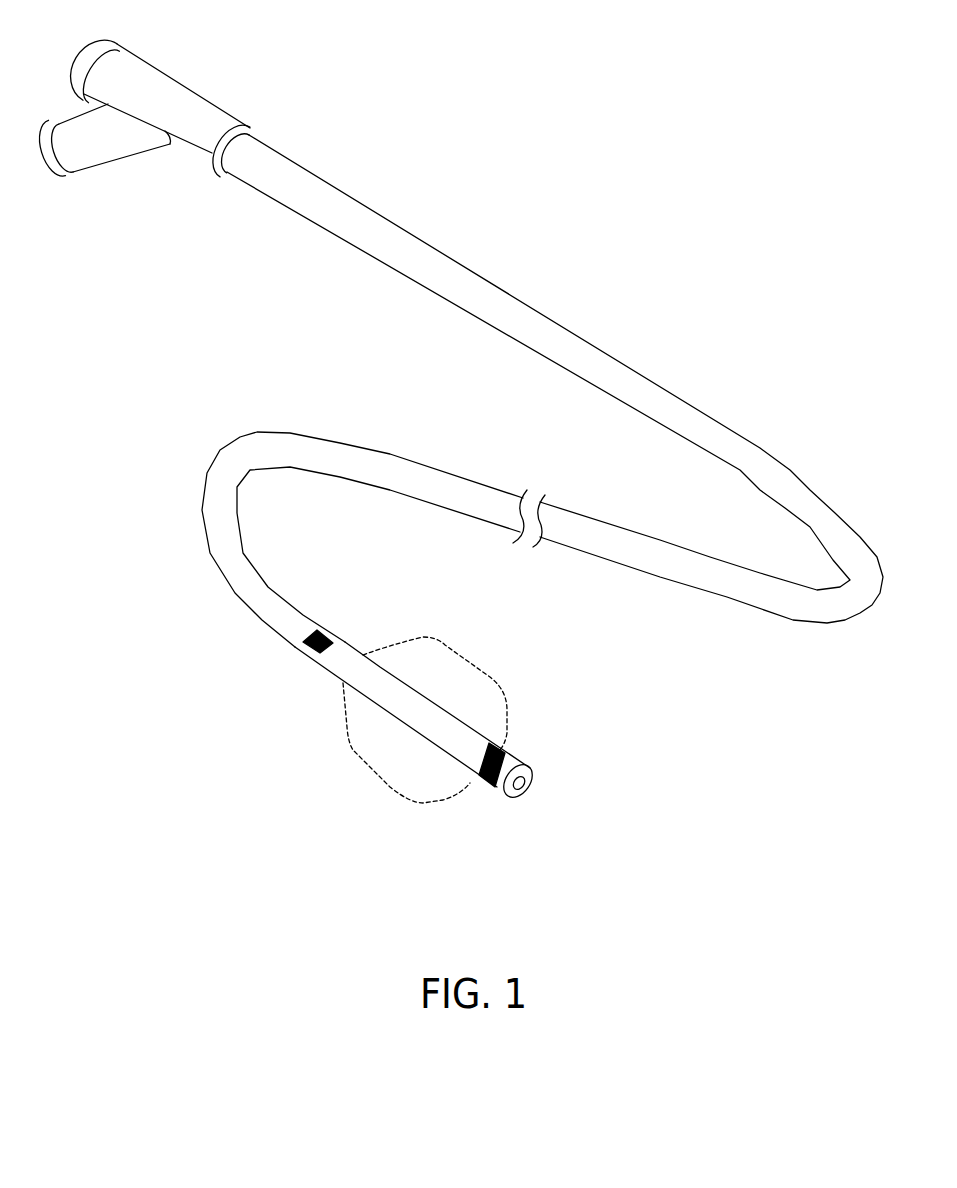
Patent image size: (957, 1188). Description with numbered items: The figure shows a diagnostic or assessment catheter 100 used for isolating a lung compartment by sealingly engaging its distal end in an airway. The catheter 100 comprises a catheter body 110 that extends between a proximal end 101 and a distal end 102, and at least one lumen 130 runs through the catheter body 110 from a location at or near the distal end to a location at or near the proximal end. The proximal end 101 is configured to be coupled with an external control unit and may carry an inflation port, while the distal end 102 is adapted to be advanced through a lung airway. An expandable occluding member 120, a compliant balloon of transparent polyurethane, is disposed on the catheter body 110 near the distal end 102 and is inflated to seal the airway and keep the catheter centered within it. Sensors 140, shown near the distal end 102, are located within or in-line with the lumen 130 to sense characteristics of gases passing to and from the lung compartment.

The catheter 100 is at (493, 84).
The proximal end 101 is at (317, 193).
The distal end 102 is at (327, 673).
The catheter body 110 is at (583, 339).
The expandable occluding member 120 is at (490, 680).
The lumen 130 is at (530, 790).
The sensor 140 is at (307, 643).